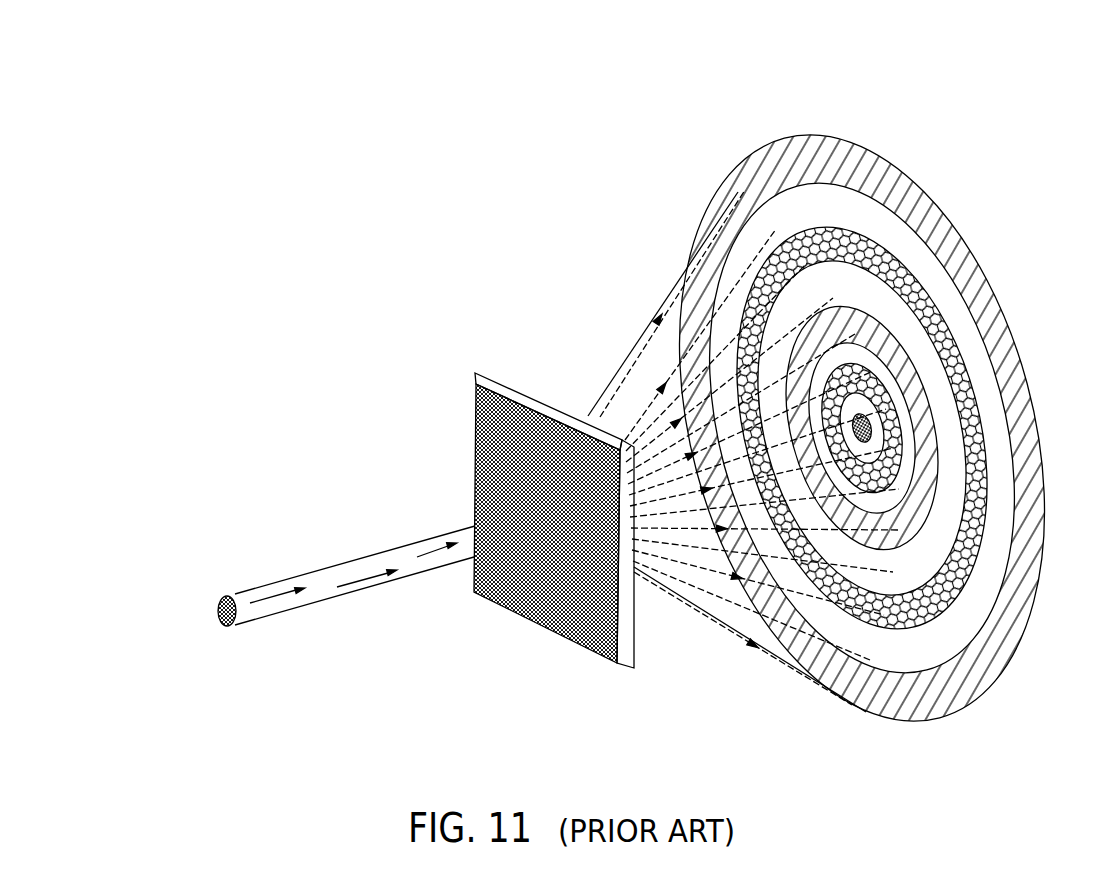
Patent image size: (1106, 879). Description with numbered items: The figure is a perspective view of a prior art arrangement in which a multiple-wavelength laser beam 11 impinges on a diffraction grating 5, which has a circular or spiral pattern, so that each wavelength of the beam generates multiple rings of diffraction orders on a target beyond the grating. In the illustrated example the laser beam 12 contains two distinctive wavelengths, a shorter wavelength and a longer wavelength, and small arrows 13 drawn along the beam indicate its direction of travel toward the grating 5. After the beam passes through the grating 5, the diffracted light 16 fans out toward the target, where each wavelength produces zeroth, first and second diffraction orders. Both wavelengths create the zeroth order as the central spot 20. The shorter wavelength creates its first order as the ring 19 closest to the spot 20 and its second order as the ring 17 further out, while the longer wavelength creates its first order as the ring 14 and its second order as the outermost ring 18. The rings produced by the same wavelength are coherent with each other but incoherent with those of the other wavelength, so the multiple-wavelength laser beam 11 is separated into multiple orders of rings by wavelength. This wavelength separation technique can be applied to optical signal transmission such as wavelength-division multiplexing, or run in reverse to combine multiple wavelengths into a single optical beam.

The diffraction grating 5 is at (573, 408).
The multiple-wavelength laser beam 11 is at (215, 607).
The laser beam 12 is at (293, 600).
The beam propagation arrows 13 is at (400, 568).
The ring 14 is at (856, 410).
The diffracted rays 16 is at (660, 312).
The ring 17 is at (862, 428).
The ring 18 is at (862, 428).
The ring 19 is at (862, 427).
The spot 20 is at (862, 428).